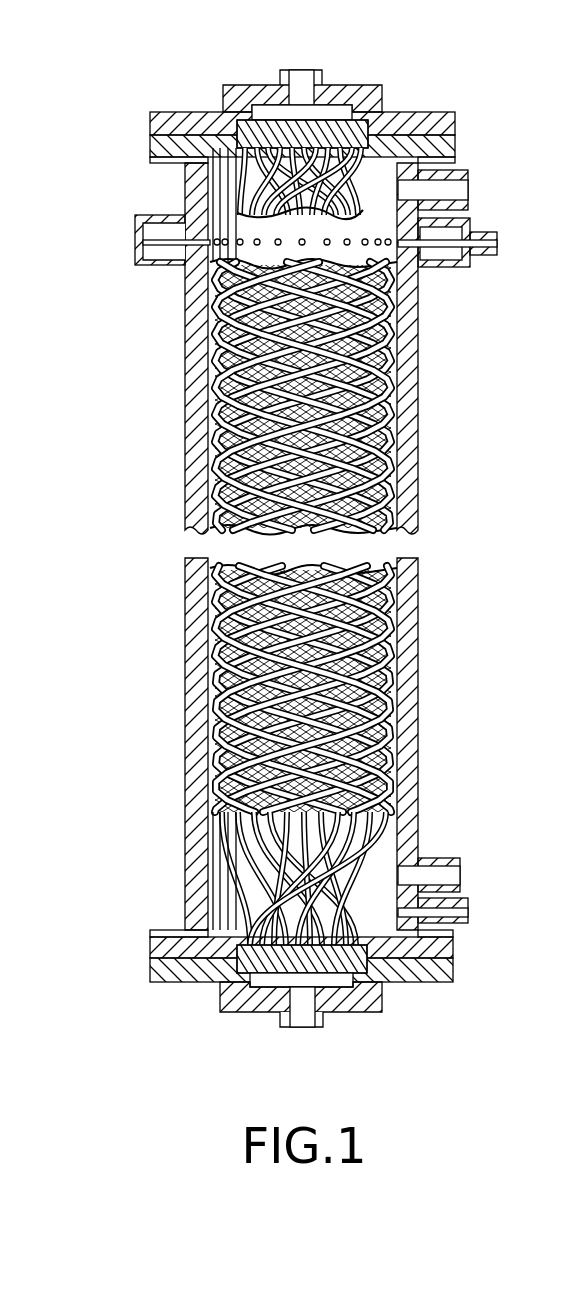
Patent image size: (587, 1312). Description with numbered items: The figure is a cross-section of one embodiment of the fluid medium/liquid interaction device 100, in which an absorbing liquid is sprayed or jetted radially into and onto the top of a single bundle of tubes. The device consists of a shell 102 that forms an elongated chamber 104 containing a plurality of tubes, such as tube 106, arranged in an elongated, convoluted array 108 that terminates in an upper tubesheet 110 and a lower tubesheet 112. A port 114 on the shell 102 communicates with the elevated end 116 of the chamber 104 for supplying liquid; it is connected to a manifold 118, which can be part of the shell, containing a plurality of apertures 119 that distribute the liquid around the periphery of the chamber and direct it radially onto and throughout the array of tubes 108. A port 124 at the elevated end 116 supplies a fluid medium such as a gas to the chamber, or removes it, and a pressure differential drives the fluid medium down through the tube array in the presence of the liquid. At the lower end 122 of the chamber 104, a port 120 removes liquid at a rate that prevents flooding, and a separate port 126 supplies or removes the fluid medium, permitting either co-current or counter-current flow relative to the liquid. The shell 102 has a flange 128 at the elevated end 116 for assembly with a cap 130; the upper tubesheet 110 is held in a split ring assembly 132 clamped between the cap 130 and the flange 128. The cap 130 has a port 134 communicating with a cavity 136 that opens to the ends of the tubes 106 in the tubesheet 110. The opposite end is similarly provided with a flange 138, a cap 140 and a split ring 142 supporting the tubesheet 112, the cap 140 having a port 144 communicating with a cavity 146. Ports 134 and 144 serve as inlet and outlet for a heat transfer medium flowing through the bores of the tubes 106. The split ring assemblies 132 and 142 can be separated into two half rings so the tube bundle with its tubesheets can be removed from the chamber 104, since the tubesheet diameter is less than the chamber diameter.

The fluid medium/liquid interaction device 100 is at (172, 412).
The shell 102 is at (185, 497).
The chamber 104 is at (372, 190).
The tube 106 is at (395, 325).
The convoluted array 108 is at (383, 383).
The upper tubesheet 110 is at (352, 135).
The lower tubesheet 112 is at (340, 968).
The port 114 is at (497, 242).
The elevated end 116 is at (190, 185).
The manifold 118 is at (160, 265).
The apertures 119 is at (372, 248).
The port 120 is at (468, 910).
The lower end 122 is at (185, 917).
The port 124 is at (468, 190).
The port 126 is at (462, 873).
The flange 128 is at (150, 160).
The cap 130 is at (190, 112).
The split ring assembly 132 is at (150, 147).
The port 134 is at (302, 68).
The cavity 136 is at (343, 113).
The flange 138 is at (150, 932).
The cap 140 is at (220, 1000).
The split ring 142 is at (150, 950).
The port 144 is at (303, 1027).
The cavity 146 is at (270, 985).